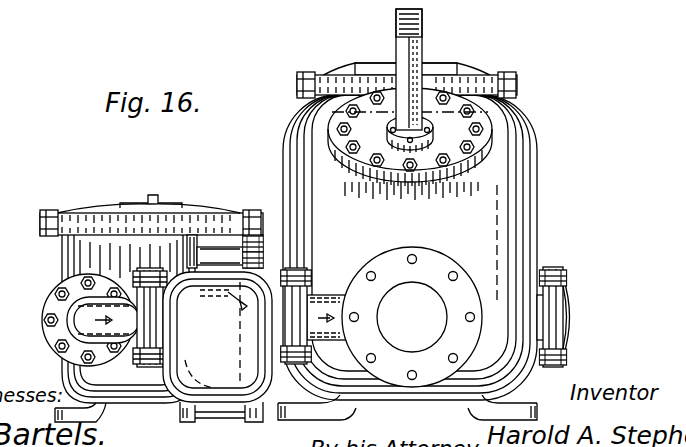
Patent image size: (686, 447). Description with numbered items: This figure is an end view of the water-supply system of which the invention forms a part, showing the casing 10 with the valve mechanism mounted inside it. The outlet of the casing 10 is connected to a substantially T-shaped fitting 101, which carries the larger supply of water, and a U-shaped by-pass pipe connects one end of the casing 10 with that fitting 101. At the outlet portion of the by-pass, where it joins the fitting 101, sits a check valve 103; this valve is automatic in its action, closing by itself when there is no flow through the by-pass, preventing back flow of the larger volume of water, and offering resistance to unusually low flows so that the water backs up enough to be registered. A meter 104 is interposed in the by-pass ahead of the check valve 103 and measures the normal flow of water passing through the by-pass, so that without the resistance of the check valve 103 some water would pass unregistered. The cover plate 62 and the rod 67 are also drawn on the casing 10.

The casing 10 is at (425, 257).
The cover plate 62 is at (468, 137).
The rod / stem 67 is at (422, 32).
The T-shaped fitting 101 is at (442, 271).
The check valve 103 is at (202, 372).
The meter 104 is at (212, 200).